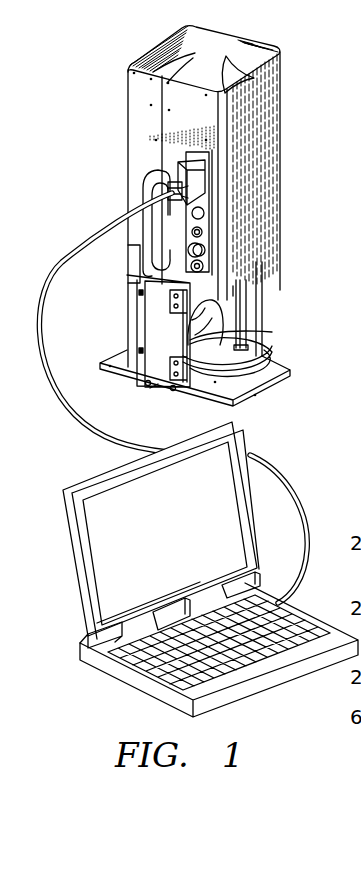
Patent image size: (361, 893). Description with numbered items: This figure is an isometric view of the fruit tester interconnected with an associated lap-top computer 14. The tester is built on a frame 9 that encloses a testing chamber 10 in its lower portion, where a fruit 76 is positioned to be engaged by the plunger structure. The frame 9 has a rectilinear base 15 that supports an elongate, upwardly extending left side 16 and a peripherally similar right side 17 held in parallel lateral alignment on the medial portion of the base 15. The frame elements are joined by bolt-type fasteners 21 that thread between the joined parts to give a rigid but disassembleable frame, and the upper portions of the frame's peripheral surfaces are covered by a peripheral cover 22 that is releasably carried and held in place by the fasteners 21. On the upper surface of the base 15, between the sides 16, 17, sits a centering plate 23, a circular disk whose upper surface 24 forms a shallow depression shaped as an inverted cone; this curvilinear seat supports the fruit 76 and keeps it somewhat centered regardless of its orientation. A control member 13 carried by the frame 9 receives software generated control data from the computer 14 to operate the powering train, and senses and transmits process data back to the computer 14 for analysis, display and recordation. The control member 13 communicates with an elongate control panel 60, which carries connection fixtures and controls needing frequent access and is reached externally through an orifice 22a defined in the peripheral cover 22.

The frame 9 is at (163, 400).
The testing chamber 10 is at (240, 293).
The control member 13 is at (213, 173).
The computer 14 is at (133, 455).
The base 15 is at (287, 377).
The left side 16 is at (160, 330).
The right side 17 is at (247, 302).
The fasteners 21 is at (187, 62).
The peripheral cover 22 is at (262, 110).
The orifice 22a is at (210, 212).
The centering plate 23 is at (220, 362).
The upper surface 24 is at (220, 335).
The control panel 60 is at (207, 241).
The fruit 76 is at (220, 322).